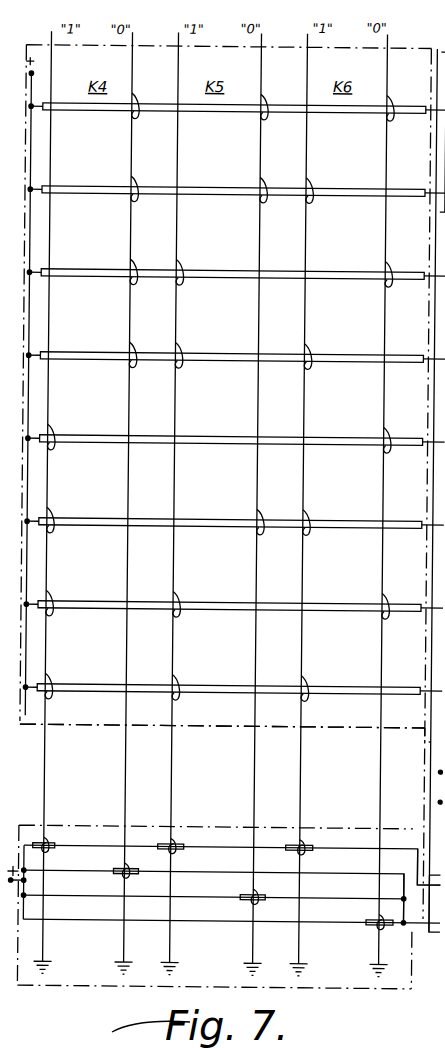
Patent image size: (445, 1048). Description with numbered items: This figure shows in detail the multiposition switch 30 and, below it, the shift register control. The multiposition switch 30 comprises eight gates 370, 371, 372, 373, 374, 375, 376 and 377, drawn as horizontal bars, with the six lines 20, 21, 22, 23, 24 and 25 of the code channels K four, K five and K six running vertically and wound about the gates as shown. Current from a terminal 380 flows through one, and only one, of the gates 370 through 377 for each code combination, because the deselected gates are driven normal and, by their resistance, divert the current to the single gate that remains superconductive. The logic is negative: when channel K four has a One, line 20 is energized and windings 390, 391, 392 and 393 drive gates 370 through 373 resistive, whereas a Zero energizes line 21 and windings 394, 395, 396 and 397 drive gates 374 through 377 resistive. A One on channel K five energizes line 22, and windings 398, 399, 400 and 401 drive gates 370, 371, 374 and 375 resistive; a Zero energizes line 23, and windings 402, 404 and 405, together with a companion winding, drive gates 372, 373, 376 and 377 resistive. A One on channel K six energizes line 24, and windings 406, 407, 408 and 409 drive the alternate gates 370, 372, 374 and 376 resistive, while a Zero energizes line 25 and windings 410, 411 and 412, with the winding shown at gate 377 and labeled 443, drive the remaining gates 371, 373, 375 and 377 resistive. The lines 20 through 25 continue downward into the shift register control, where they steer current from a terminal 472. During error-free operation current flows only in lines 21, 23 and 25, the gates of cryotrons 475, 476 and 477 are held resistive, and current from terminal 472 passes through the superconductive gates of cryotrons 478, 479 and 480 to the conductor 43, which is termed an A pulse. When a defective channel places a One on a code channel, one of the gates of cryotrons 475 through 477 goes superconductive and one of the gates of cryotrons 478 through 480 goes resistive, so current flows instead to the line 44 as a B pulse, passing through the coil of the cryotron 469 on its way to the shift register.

The line 20 is at (49, 330).
The line 21 is at (128, 330).
The line 22 is at (178, 336).
The line 23 is at (259, 335).
The line 24 is at (305, 333).
The line 25 is at (385, 338).
The multiposition switch 30 is at (222, 730).
The conductor 43 is at (428, 887).
The line 44 is at (438, 928).
The gate 370 is at (274, 691).
The gate 371 is at (281, 610).
The gate 372 is at (211, 528).
The gate 373 is at (215, 445).
The gate 374 is at (233, 362).
The gate 375 is at (231, 280).
The gate 376 is at (222, 196).
The gate 377 is at (230, 112).
The terminal 380 is at (28, 75).
The winding 390 is at (53, 615).
The winding 391 is at (53, 533).
The winding 392 is at (52, 452).
The winding 393 is at (54, 699).
The winding 394 is at (129, 364).
The winding 395 is at (129, 281).
The winding 396 is at (129, 197).
The winding 397 is at (128, 113).
The winding 398 is at (180, 698).
The winding 399 is at (180, 615).
The winding 400 is at (177, 368).
The winding 401 is at (178, 285).
The winding 402 is at (265, 532).
The winding 404 is at (264, 200).
The winding 405 is at (264, 117).
The winding 406 is at (310, 694).
The winding 407 is at (310, 532).
The winding 408 is at (309, 366).
The winding 409 is at (309, 200).
The winding 410 is at (388, 615).
The winding 411 is at (388, 447).
The winding 412 is at (388, 282).
The contact 443 is at (387, 118).
The cryotron 469 is at (444, 818).
The terminal 472 is at (18, 885).
The cryotron 475 is at (146, 880).
The cryotron 476 is at (250, 904).
The cryotron 477 is at (372, 919).
The cryotron 478 is at (64, 847).
The cryotron 479 is at (188, 846).
The cryotron 480 is at (322, 845).